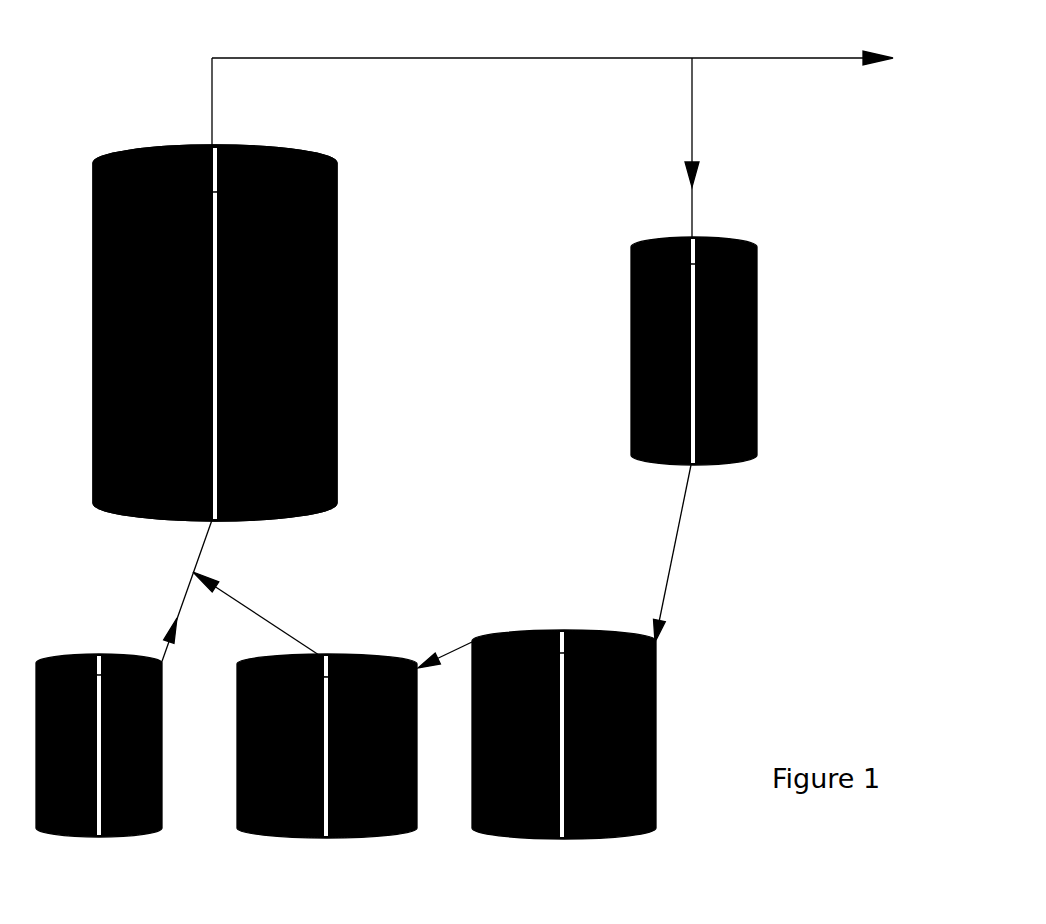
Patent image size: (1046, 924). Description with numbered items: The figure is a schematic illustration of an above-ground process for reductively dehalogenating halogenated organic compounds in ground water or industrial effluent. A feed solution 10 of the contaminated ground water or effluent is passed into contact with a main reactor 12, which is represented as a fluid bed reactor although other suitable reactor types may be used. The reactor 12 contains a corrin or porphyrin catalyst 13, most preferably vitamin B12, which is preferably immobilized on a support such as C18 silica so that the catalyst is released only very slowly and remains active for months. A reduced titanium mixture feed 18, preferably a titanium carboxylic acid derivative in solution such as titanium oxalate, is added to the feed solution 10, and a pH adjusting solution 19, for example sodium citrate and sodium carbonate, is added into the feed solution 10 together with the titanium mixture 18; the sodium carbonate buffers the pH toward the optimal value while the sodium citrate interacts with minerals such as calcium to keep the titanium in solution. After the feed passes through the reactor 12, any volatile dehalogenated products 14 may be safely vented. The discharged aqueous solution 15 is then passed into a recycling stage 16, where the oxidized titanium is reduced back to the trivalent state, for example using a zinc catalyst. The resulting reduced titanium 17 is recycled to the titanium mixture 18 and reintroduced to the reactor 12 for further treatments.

The feed solution 10 is at (99, 763).
The main reactor 12 is at (93, 349).
The corrin or porphyrin catalyst 13 is at (337, 348).
The volatile dehalogenated products 14 is at (552, 44).
The discharged aqueous solution 15 is at (711, 147).
The recycling stage 16 is at (672, 351).
The reduced titanium 17 is at (686, 553).
The reduced titanium mixture feed 18 is at (564, 752).
The pH adjusting solution 19 is at (327, 763).